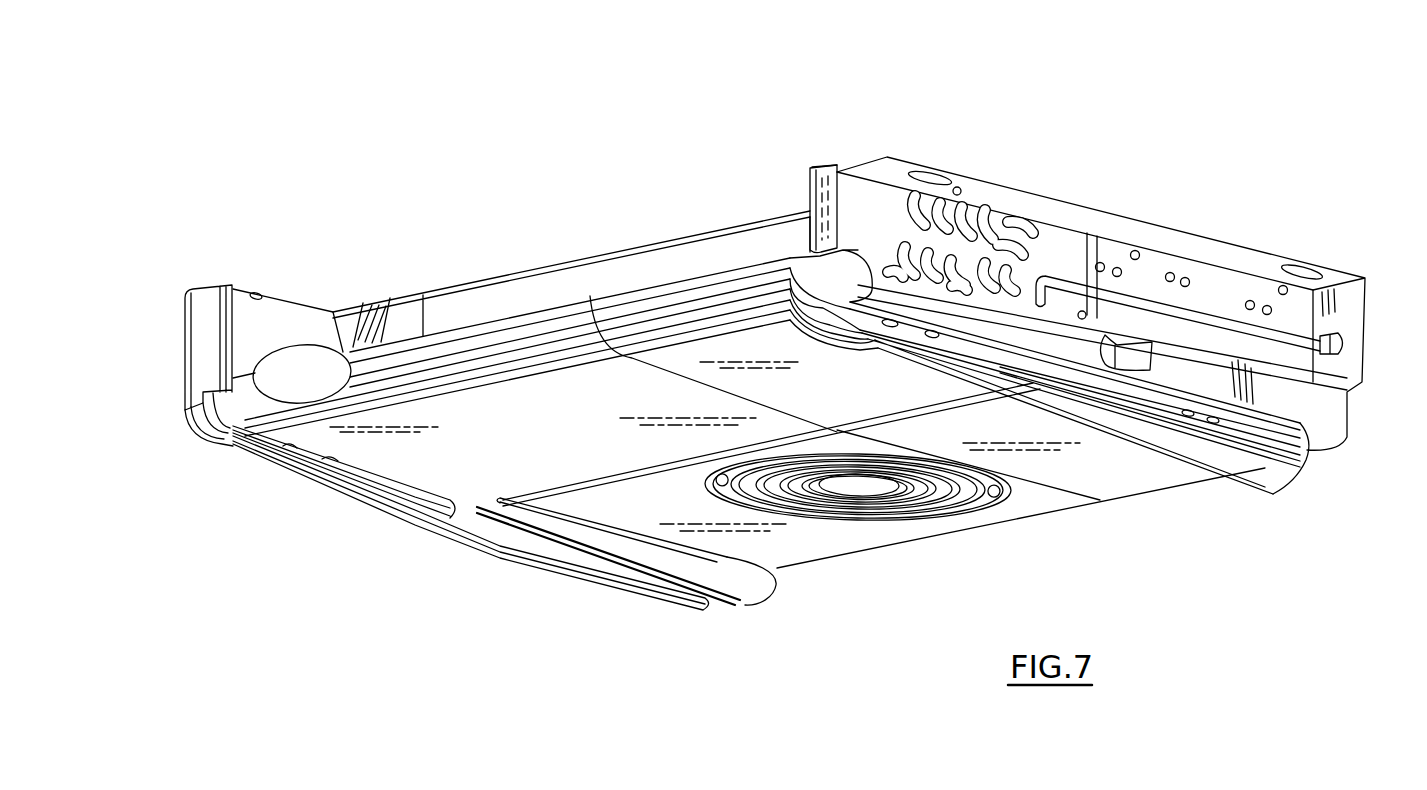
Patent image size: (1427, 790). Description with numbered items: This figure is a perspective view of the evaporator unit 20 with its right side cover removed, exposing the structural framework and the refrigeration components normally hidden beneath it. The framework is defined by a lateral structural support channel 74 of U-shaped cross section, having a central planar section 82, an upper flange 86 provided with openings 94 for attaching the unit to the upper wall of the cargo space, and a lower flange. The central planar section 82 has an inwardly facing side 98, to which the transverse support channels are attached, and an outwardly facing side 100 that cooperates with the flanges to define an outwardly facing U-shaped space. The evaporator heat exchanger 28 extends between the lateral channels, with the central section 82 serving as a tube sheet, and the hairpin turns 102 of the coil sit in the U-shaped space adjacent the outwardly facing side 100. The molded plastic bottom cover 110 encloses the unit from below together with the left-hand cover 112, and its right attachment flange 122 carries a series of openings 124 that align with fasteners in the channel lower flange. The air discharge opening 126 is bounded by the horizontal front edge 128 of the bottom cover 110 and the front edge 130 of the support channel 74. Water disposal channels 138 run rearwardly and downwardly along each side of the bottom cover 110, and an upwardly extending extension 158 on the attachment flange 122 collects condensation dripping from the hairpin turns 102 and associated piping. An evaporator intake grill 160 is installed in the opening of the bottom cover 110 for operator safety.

The evaporator unit 20 is at (706, 83).
The evaporator heat exchanger 28 is at (523, 268).
The lateral structural support channel 74 is at (826, 167).
The central planar section 82 is at (809, 193).
The upper flange 86 is at (1100, 206).
The openings 94 is at (927, 178).
The inwardly facing side 98 is at (290, 339).
The outwardly facing side 100 is at (879, 227).
The hairpin turns 102 is at (990, 220).
The bottom cover 110 is at (548, 436).
The left-hand cover 112 is at (182, 337).
The right attachment flange 122 is at (1297, 443).
The openings 124 is at (930, 336).
The air discharge opening 126 is at (250, 310).
The horizontal front edge 128 is at (423, 300).
The front edge 130 is at (810, 232).
The water disposal channel 138 is at (746, 604).
The upwardly extending extension 158 is at (1342, 343).
The evaporator intake grill 160 is at (918, 513).